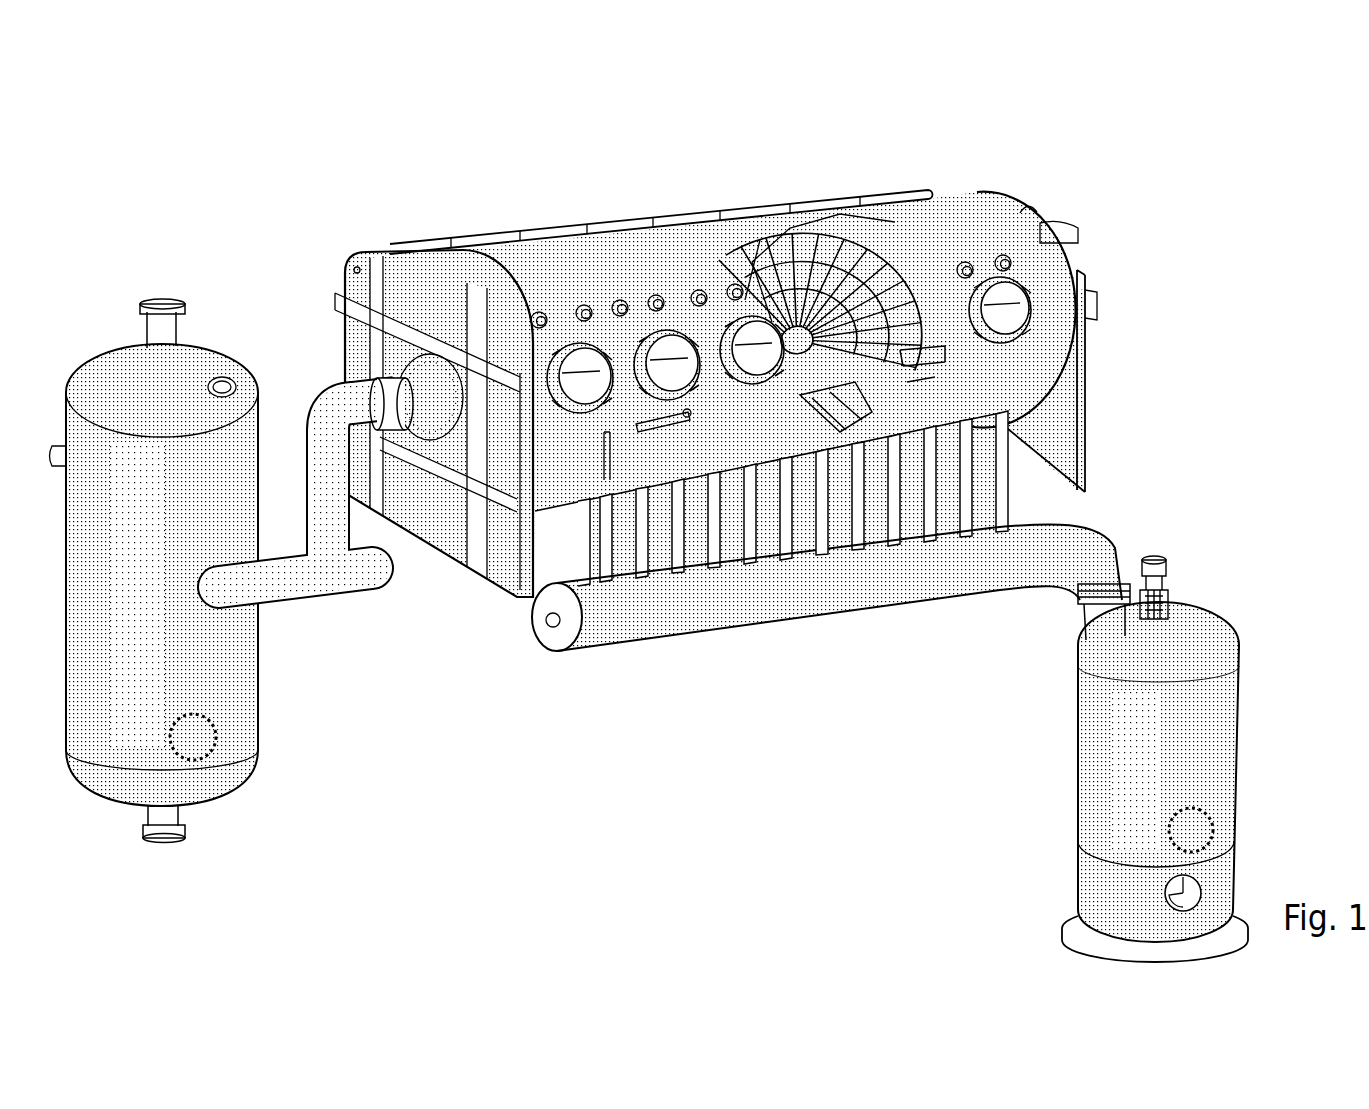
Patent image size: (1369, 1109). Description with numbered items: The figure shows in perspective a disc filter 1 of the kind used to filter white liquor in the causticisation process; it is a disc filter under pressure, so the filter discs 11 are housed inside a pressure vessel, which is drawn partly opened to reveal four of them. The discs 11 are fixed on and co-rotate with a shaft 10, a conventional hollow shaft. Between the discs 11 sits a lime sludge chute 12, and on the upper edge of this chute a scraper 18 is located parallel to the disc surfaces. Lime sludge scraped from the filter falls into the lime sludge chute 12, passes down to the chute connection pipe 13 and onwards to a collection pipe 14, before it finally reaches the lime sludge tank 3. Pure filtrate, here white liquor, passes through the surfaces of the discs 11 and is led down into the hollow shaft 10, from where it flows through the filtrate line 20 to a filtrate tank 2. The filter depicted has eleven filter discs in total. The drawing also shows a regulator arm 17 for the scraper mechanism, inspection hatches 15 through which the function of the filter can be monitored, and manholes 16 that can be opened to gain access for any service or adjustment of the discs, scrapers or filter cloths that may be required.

The disc filter 1 is at (370, 197).
The filtrate tank 2 is at (156, 520).
The lime sludge tank 3 is at (1156, 742).
The shaft 10 is at (870, 407).
The filter discs 11 is at (790, 290).
The lime sludge chute 12 is at (832, 413).
The chute connection pipe 13 is at (830, 487).
The collection pipe 14 is at (694, 619).
The inspection hatches 15 is at (1000, 254).
The manholes 16 is at (1000, 302).
The regulator arm 17 is at (633, 428).
The scraper 18 is at (903, 367).
The filtrate line 20 is at (310, 403).